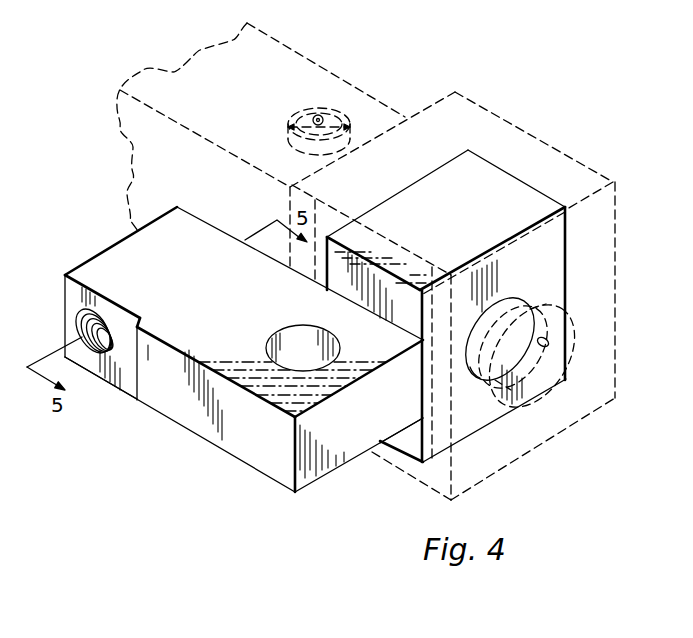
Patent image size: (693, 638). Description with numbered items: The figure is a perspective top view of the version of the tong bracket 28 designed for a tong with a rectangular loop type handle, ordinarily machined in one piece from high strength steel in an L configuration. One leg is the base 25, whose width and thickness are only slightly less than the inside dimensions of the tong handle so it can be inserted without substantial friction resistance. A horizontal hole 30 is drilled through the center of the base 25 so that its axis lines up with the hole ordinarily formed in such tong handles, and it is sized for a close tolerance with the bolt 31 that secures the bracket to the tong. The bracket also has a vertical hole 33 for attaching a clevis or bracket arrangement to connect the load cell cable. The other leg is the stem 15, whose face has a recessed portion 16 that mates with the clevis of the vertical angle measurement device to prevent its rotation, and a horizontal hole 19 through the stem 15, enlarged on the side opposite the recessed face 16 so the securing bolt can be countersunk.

The stem 15 is at (188, 415).
The recessed face portion 16 is at (118, 367).
The hole 19 is at (78, 322).
The base 25 is at (512, 192).
The tong bracket 28 is at (357, 440).
The horizontal hole 30 is at (505, 302).
The bolt 31 is at (580, 332).
The vertical hole 33 is at (287, 363).